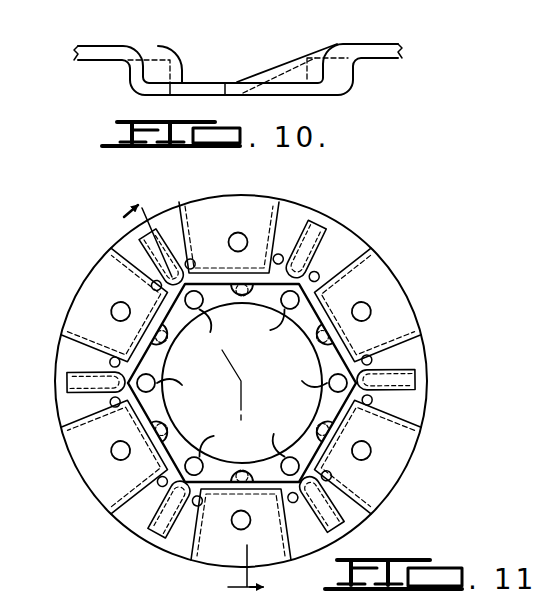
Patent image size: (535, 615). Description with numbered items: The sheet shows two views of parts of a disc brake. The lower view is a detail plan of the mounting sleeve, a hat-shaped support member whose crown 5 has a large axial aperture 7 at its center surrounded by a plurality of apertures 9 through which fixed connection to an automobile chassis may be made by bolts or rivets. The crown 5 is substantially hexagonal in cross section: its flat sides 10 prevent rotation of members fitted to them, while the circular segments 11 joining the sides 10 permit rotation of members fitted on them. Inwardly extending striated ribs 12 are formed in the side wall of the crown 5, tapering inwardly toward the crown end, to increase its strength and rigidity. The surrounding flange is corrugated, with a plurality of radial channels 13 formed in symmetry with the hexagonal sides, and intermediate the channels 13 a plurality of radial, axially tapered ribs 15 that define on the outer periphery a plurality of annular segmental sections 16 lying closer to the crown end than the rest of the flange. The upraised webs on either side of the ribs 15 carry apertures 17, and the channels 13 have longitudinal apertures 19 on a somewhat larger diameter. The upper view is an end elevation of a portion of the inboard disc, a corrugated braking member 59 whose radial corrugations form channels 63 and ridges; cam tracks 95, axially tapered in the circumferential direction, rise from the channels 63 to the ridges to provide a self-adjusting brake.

In FIG. 11, the crown 5 is at (310, 356).
In FIG. 11, the axial aperture 7 is at (166, 368).
In FIG. 11, the apertures 9 is at (200, 310).
In FIG. 11, the flat sides 10 is at (266, 305).
In FIG. 11, the circular segments 11 is at (213, 326).
In FIG. 11, the striated ribs 12 is at (318, 426).
In FIG. 11, the radial channels 13 is at (112, 270).
In FIG. 11, the radial striated ribs 15 is at (183, 240).
In FIG. 11, the annular segmental sections 16 is at (150, 238).
In FIG. 11, the apertures 17 is at (286, 258).
In FIG. 11, the longitudinal apertures 19 is at (248, 238).
In FIG. 10, the spring strip 59 is at (376, 42).
In FIG. 10, the channels 63 is at (172, 64).
In FIG. 10, the cam tracks 95 is at (336, 44).